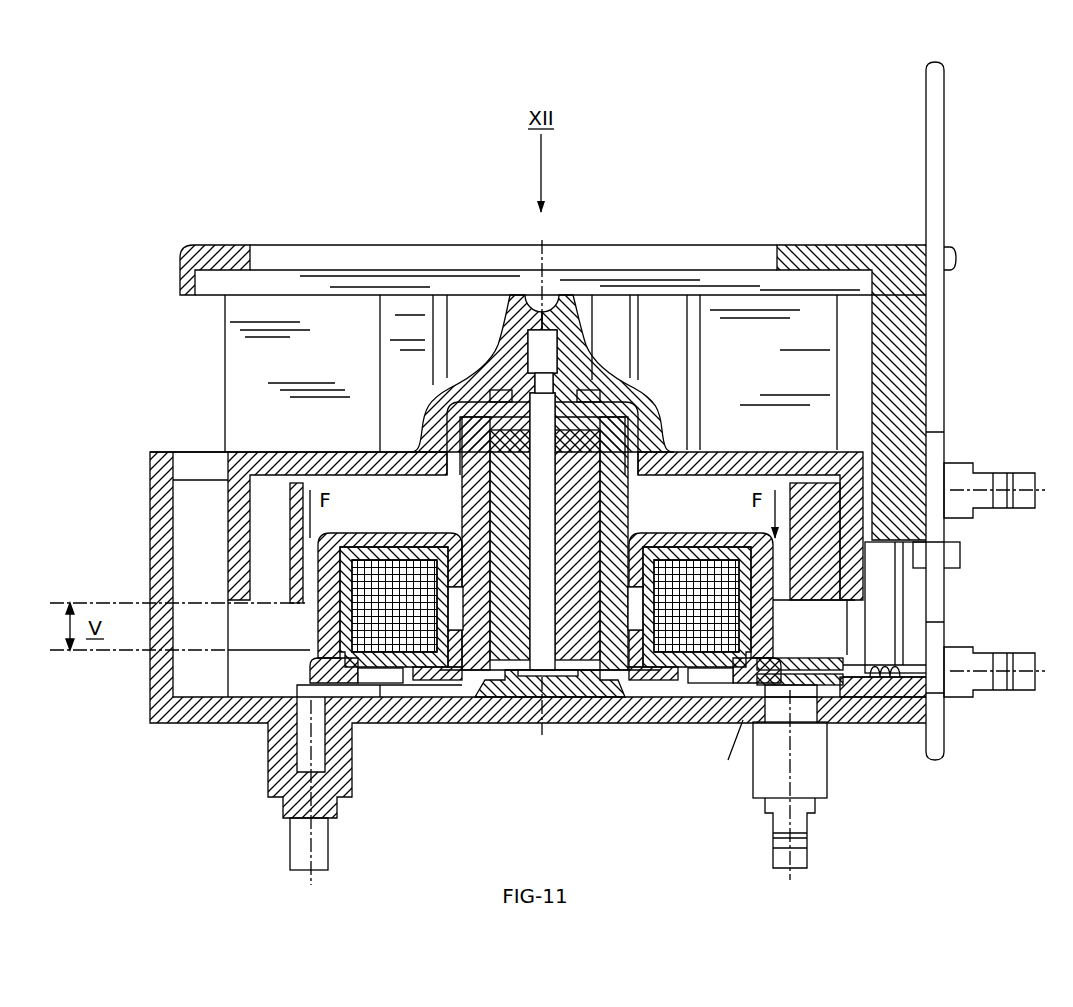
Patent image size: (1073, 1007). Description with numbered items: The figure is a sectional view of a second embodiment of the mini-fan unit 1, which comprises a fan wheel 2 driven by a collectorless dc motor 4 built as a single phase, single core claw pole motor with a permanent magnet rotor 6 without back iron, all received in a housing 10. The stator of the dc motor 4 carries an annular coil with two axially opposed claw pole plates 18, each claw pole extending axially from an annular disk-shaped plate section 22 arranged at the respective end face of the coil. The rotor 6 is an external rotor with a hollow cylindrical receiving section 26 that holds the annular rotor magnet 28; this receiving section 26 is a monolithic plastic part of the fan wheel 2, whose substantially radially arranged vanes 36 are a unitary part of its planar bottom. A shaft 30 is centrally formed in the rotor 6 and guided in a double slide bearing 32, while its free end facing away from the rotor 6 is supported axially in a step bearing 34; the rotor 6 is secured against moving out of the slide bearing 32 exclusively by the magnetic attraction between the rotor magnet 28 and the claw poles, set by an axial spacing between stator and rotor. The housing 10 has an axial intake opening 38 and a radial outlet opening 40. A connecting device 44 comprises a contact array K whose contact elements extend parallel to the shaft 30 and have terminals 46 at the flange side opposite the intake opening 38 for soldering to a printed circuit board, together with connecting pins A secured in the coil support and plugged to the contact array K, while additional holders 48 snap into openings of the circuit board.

The mini-fan unit 1 is at (170, 755).
The fan wheel 2 is at (327, 325).
The dc motor 4 is at (268, 682).
The rotor 6 is at (258, 496).
The housing 10 is at (182, 265).
The claw pole plates 18 is at (720, 532).
The plate section 22 is at (407, 533).
The receiving section 26 is at (236, 527).
The rotor magnet 28 is at (265, 575).
The shaft 30 is at (590, 292).
The slide bearing 32 is at (627, 417).
The step bearing 34 is at (560, 722).
The vanes 36 is at (815, 333).
The intake opening 38 is at (758, 255).
The outlet opening 40 is at (198, 361).
The connecting device 44 is at (958, 770).
The terminals 46 is at (935, 100).
The holders 48 is at (985, 480).
The connecting pins A is at (853, 678).
The contact array K is at (950, 187).